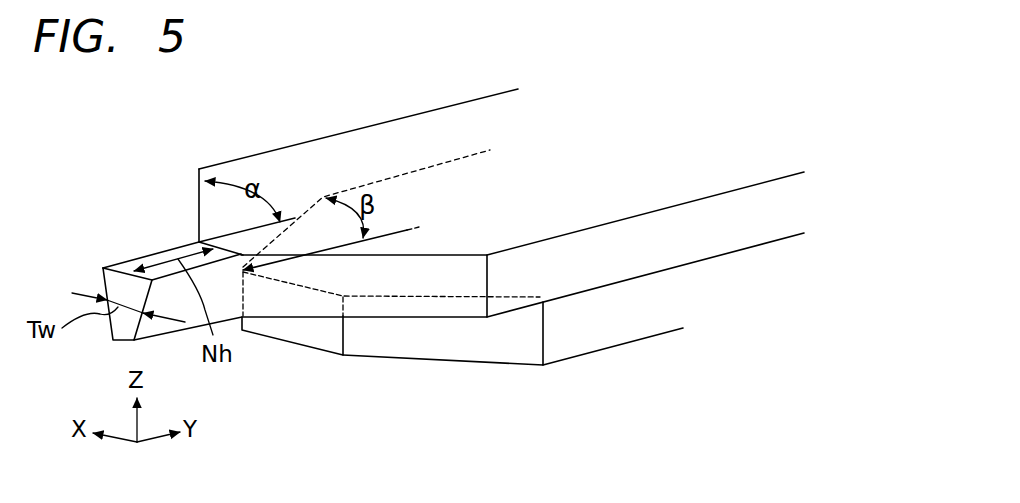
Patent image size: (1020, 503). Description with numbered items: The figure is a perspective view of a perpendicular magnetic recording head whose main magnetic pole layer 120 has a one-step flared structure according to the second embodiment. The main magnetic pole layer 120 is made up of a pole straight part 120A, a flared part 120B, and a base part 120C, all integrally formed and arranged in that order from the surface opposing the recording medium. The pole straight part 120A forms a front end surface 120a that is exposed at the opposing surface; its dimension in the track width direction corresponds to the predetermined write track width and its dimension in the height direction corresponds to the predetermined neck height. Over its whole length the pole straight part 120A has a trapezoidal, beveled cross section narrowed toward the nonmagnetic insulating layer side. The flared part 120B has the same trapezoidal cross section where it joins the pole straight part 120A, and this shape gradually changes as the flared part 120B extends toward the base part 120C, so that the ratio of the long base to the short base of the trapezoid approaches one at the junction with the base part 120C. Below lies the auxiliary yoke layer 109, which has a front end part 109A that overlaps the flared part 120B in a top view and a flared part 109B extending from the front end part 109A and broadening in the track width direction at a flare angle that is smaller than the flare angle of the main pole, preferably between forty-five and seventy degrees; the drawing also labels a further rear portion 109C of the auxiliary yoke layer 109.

The main magnetic pole layer 120 is at (603, 152).
The pole straight part 120A is at (135, 258).
The flared part 120B is at (220, 223).
The base part 120C is at (337, 150).
The front end surface 120a is at (123, 326).
The auxiliary yoke layer 109 is at (410, 379).
The front end part 109A is at (252, 328).
The flared part 109B is at (498, 365).
The third portion of waveguide core 109C is at (646, 322).